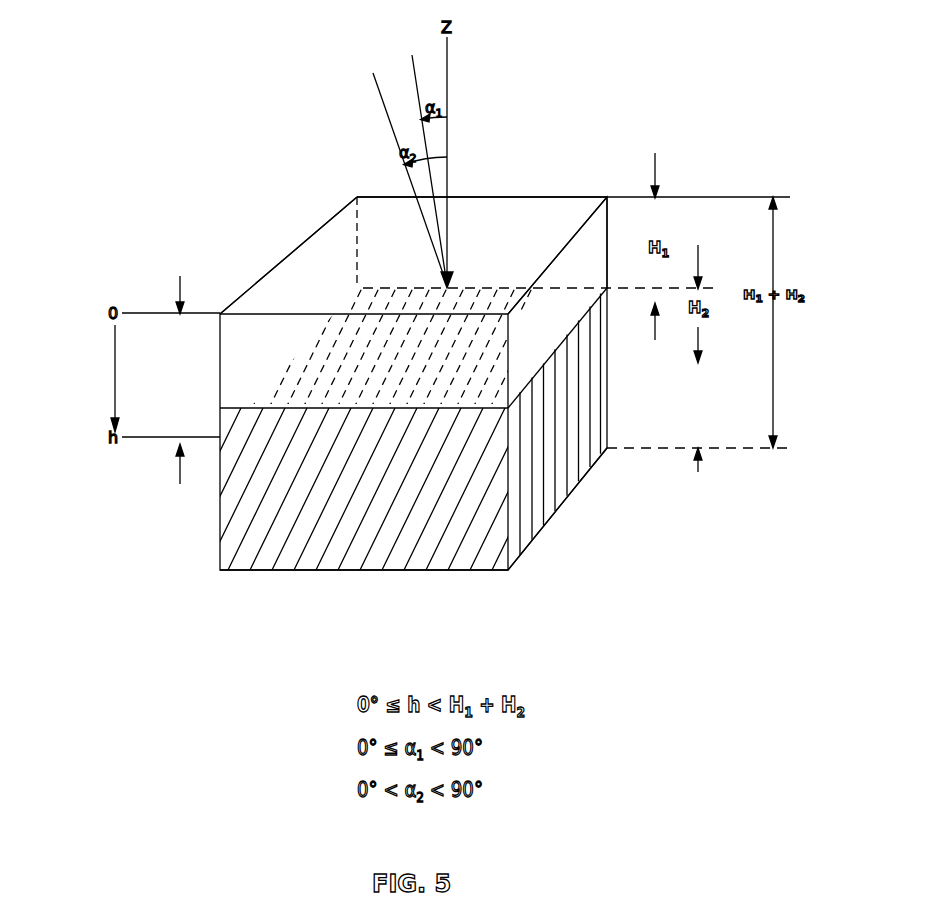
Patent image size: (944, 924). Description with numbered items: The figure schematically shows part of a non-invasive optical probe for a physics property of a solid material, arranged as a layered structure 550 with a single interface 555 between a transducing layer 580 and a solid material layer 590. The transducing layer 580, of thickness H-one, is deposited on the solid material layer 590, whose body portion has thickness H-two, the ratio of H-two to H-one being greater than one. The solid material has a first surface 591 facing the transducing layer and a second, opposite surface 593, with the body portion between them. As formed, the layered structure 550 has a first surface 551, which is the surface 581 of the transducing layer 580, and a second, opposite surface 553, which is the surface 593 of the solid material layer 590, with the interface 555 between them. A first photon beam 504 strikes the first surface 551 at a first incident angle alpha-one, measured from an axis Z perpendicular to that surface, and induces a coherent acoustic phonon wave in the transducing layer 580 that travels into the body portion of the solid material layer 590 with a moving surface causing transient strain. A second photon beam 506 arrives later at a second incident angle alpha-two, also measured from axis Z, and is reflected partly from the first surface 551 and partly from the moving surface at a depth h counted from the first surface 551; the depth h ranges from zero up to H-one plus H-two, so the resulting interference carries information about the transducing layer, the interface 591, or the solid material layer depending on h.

The first photon beam 504 is at (416, 96).
The second photon beam 506 is at (384, 112).
The layered structure 550 is at (636, 126).
The first surface 551 is at (377, 222).
The second surface 553 is at (337, 571).
The interface 555 is at (525, 392).
The transducing layer 580 is at (592, 243).
The surface of the transducing layer 581 is at (313, 287).
The solid material layer 590 is at (583, 448).
The first surface of the solid material 591 is at (310, 397).
The second surface of the solid material 593 is at (443, 572).